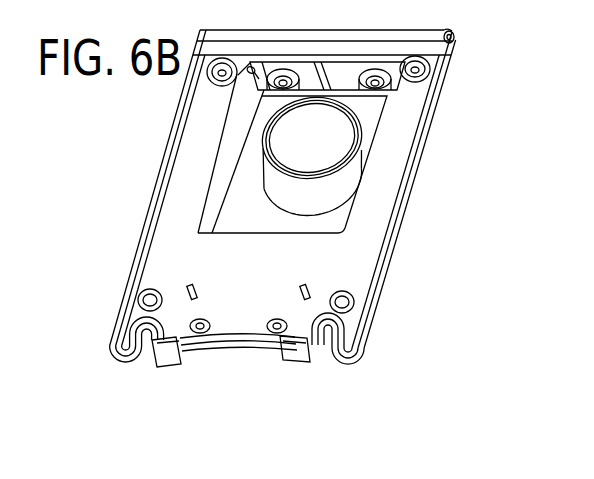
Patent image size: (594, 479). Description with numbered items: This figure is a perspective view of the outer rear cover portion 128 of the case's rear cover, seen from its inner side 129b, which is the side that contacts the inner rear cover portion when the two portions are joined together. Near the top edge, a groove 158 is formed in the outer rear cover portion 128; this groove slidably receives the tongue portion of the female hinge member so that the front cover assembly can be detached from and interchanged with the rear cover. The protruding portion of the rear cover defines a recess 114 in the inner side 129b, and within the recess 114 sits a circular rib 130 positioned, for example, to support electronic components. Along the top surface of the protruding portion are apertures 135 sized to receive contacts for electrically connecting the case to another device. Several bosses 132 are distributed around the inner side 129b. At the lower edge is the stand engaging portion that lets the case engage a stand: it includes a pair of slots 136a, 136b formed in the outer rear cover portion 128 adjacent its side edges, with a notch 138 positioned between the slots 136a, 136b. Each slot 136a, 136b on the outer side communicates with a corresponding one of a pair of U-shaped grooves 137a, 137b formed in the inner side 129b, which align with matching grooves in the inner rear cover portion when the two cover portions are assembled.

The outer rear cover portion 128 is at (504, 73).
The groove 158 is at (454, 36).
The screw boss 132 is at (220, 82).
The apertures 135 is at (283, 90).
The recess 114 is at (247, 222).
The inner side 129b is at (393, 173).
The circular rib 130 is at (328, 190).
The U-shaped groove 137a is at (300, 302).
The U-shaped groove 137b is at (181, 302).
The slot 136a is at (318, 352).
The slot 136b is at (147, 355).
The notch 138 is at (215, 352).